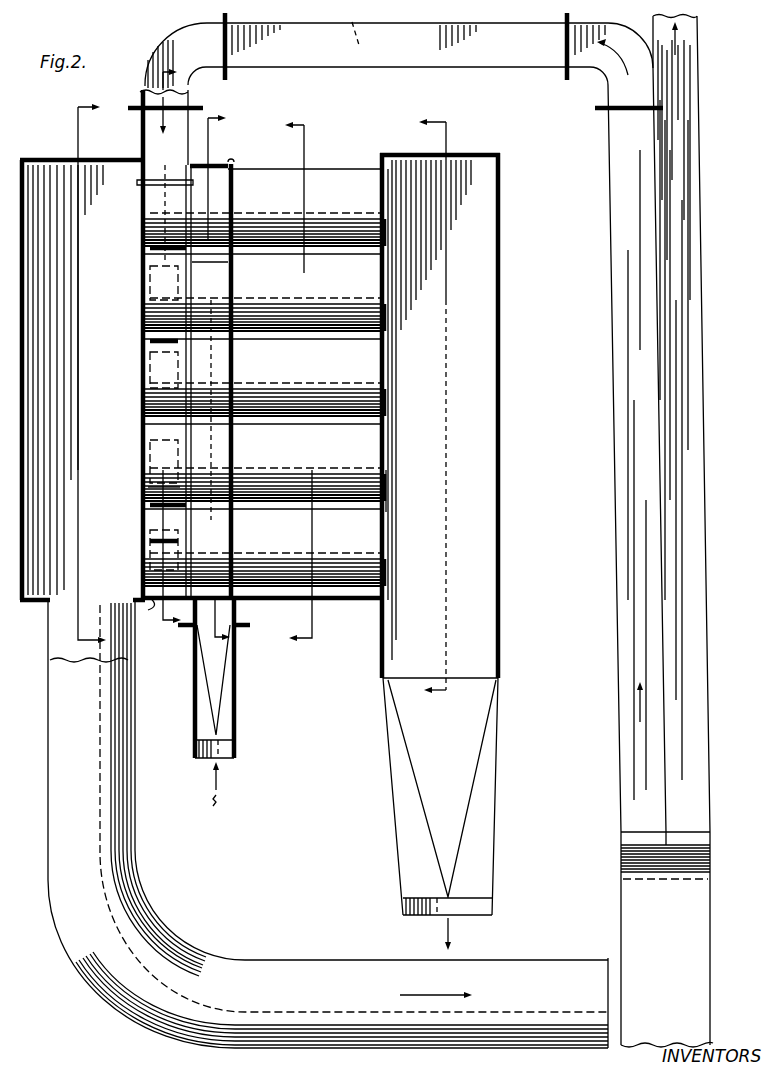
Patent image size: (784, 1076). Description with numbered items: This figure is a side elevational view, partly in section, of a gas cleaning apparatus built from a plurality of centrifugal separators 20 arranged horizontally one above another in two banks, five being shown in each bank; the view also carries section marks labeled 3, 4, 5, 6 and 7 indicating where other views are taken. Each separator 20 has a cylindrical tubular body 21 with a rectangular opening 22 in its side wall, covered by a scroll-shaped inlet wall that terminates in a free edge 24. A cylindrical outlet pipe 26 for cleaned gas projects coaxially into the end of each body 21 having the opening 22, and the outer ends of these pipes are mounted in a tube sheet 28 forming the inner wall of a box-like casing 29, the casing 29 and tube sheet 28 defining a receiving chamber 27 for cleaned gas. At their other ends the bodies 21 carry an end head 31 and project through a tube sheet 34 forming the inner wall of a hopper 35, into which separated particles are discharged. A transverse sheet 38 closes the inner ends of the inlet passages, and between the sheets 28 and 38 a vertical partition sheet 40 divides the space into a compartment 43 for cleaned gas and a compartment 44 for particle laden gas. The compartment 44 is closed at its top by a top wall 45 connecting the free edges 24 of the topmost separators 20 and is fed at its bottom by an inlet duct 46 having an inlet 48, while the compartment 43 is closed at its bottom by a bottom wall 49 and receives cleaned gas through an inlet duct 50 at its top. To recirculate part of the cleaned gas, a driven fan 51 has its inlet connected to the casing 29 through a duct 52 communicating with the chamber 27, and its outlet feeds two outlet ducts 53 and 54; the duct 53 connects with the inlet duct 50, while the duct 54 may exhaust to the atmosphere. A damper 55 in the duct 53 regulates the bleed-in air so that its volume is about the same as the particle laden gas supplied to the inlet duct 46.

The centrifugal separator 20 is at (327, 166).
The tubular body 21 is at (380, 352).
The opening 22 is at (150, 343).
The free edge 24 is at (143, 250).
The outlet pipe 26 is at (160, 438).
The receiving chamber 27 is at (150, 486).
The tube sheet 28 is at (148, 353).
The casing 29 is at (39, 158).
The end head 31 is at (388, 480).
The tube sheet 34 is at (382, 604).
The hopper 35 is at (500, 510).
The transverse sheet 38 is at (236, 447).
The partition sheet 40 is at (203, 382).
The compartment 43 is at (150, 264).
The compartment 44 is at (218, 268).
The top wall 45 is at (224, 164).
The inlet duct 46 is at (238, 622).
The inlet 48 is at (224, 758).
The bottom wall 49 is at (148, 600).
The inlet duct 50 is at (140, 128).
The fan 51 is at (700, 902).
The duct 52 is at (206, 969).
The outlet duct 53 is at (527, 68).
The outlet duct 54 is at (698, 55).
The damper 55 is at (357, 32).
The section line 3 is at (86, 376).
The section line 4 is at (166, 351).
The section line 5 is at (220, 383).
The section line 6 is at (302, 382).
The section line 7 is at (441, 407).